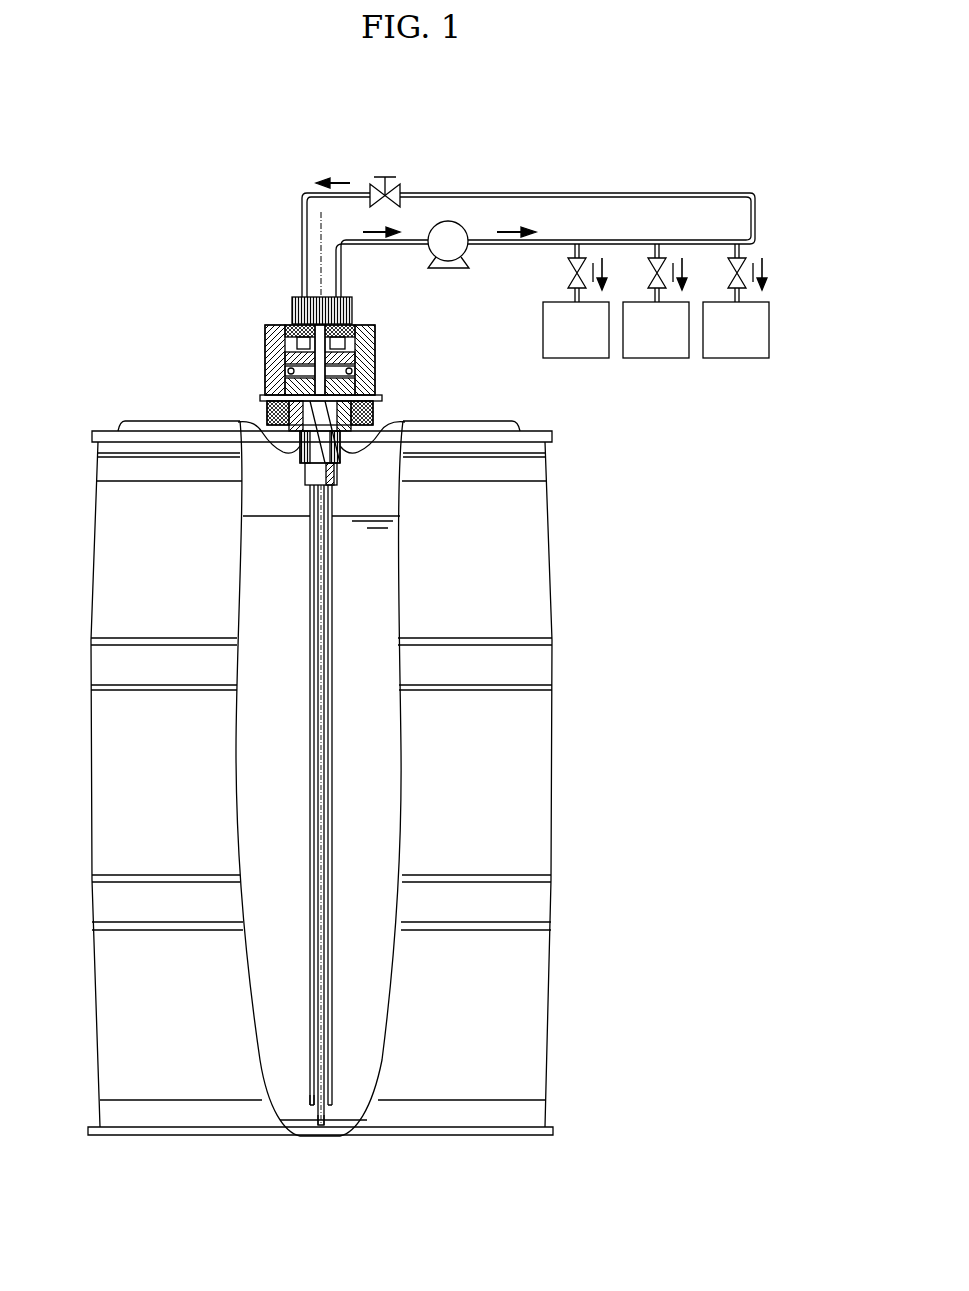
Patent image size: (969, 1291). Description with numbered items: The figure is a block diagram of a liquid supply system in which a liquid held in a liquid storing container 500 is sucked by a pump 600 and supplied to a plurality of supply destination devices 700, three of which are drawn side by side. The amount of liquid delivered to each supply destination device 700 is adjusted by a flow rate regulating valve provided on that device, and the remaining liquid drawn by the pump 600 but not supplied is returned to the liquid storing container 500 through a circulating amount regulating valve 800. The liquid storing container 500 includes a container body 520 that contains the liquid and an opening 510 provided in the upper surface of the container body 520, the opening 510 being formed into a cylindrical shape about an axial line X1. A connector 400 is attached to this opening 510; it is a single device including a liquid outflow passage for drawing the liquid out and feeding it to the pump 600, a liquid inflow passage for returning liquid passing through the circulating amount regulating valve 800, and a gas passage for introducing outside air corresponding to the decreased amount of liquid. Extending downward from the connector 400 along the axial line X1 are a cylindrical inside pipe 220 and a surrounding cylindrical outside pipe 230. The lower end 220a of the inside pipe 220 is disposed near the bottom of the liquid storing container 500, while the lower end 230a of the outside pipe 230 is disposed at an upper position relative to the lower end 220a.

The circulating amount regulating valve 800 is at (403, 187).
The pump 600 is at (447, 270).
The supply destination device 700 is at (577, 358).
The connector 400 is at (248, 318).
The liquid storing container 500 is at (391, 778).
The opening 510 is at (286, 470).
The container body 520 is at (538, 582).
The outside pipe 230 is at (333, 951).
The lower end of the outside pipe 230a is at (310, 1100).
The inside pipe 220 is at (333, 1057).
The lower end of the inside pipe 220a is at (332, 1138).
The axial line X1 is at (318, 891).